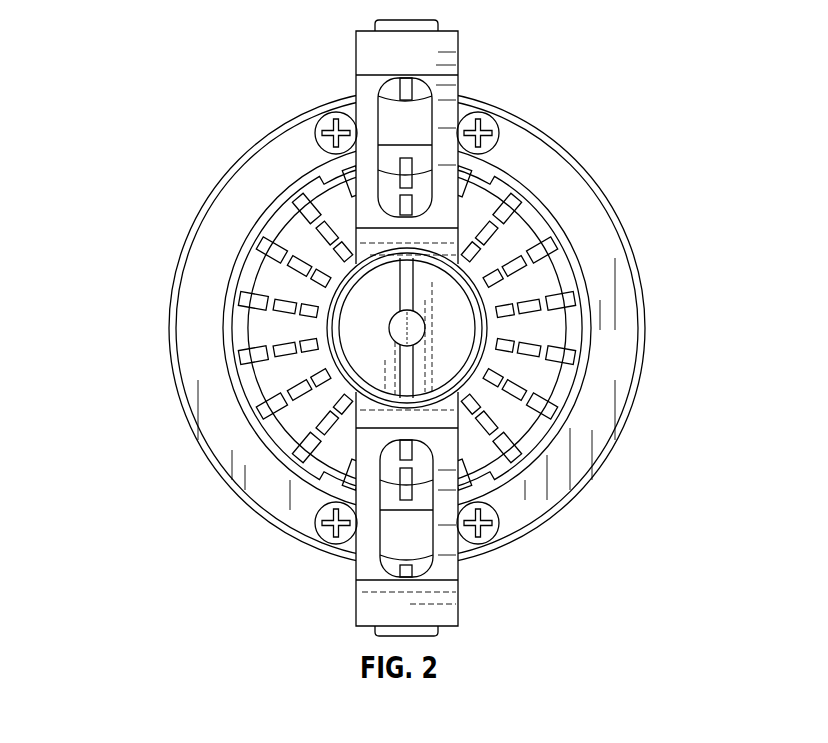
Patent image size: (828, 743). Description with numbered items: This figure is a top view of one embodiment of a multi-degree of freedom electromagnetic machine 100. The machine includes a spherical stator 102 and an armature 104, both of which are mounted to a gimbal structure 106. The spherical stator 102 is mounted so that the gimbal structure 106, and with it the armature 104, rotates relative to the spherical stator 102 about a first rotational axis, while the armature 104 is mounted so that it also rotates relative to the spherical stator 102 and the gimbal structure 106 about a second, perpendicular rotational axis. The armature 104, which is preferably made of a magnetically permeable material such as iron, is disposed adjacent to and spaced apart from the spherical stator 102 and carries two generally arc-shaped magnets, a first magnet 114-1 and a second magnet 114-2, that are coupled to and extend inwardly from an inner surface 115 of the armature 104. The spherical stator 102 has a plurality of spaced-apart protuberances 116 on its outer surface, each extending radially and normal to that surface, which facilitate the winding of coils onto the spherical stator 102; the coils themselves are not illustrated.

The multi-degree of freedom electromagnetic machine 100 is at (160, 70).
The spherical stator 102 is at (279, 228).
The armature 104 is at (545, 131).
The gimbal structure 106 is at (461, 52).
The first magnet 114-1 is at (548, 223).
The second magnet 114-2 is at (256, 430).
The inner surface 115 is at (473, 158).
The protuberances 116 is at (557, 412).